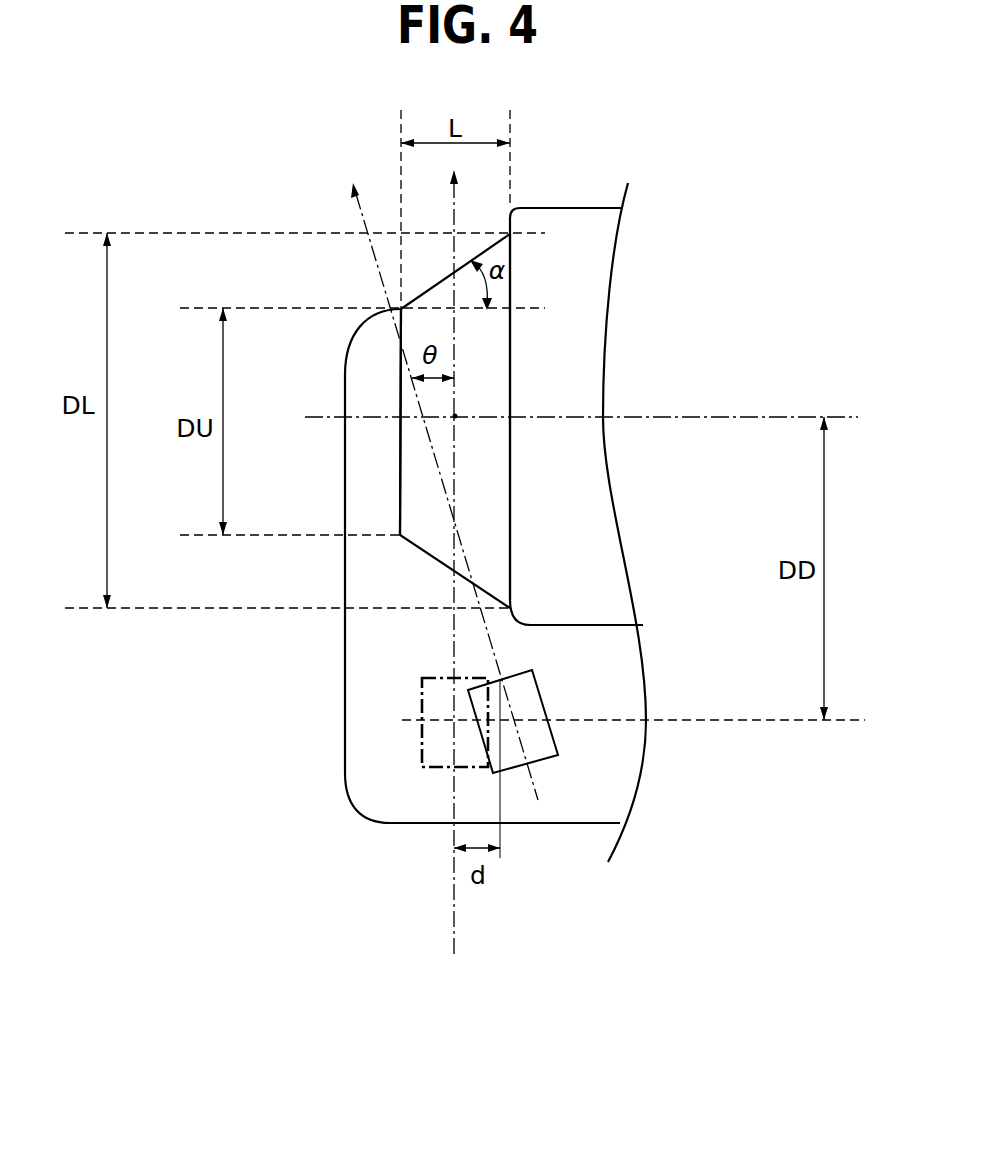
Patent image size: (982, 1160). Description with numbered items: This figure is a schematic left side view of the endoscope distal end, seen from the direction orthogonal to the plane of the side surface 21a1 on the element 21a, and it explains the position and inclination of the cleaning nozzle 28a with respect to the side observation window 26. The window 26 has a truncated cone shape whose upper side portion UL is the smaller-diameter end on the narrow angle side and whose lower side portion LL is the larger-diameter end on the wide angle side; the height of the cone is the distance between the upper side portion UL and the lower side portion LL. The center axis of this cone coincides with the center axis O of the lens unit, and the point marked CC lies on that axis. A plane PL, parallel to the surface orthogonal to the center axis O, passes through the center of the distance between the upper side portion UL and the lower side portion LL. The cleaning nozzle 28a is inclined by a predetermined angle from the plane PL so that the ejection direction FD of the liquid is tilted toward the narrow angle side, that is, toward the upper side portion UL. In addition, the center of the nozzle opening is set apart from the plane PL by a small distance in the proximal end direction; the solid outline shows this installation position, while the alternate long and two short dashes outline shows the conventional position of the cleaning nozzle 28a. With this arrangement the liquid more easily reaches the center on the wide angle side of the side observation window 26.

The side wall of housing 21a is at (345, 763).
The side surface 21a1 is at (415, 797).
The side observation window 26 is at (438, 540).
The cleaning nozzle 28a is at (422, 737).
The plane PL is at (454, 910).
The ejection direction FD is at (454, 242).
The center axis O is at (762, 417).
The center point CC is at (457, 415).
The upper side portion UL is at (400, 448).
The lower side portion LL is at (511, 493).